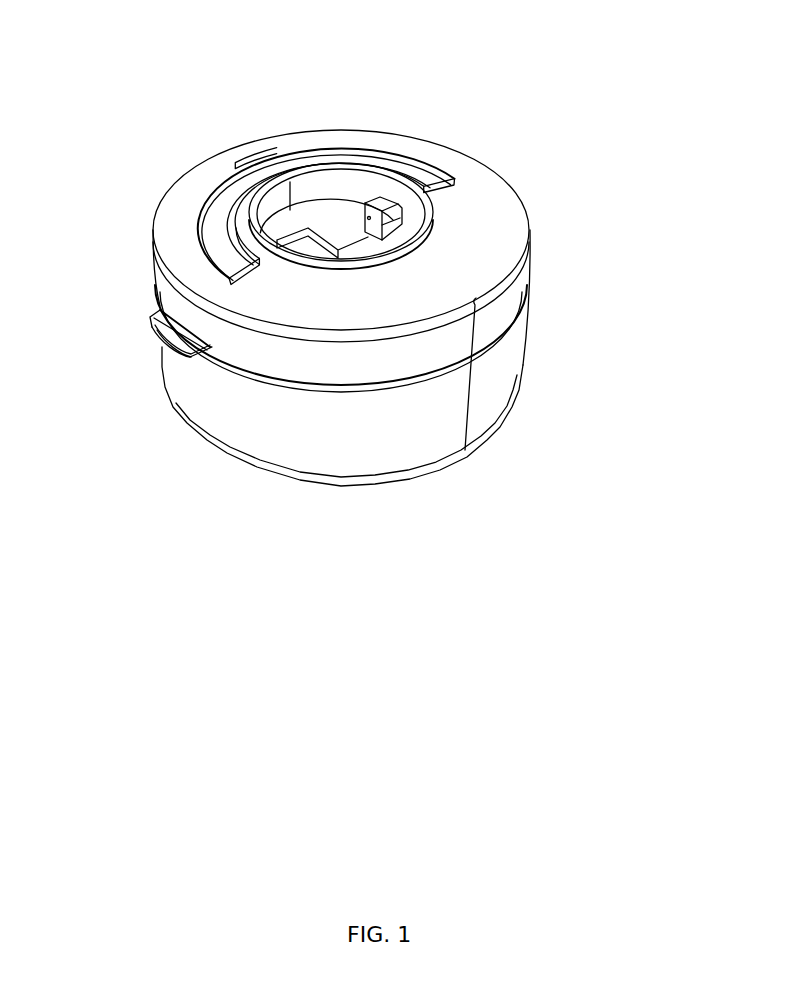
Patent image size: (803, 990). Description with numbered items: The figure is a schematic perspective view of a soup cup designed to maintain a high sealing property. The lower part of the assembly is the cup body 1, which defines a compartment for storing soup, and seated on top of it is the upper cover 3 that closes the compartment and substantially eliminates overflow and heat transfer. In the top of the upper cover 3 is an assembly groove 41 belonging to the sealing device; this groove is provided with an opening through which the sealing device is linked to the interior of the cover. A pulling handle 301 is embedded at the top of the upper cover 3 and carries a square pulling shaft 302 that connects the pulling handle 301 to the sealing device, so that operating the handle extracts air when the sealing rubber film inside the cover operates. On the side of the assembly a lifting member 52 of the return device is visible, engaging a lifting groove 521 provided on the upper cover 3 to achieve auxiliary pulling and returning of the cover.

The cup body 1 is at (503, 373).
The upper cover 3 is at (508, 250).
The assembly groove 41 is at (353, 195).
The pulling handle 301 is at (372, 226).
The pulling shaft 302 is at (405, 185).
The lifting member 52 is at (174, 348).
The lifting groove 521 is at (207, 352).